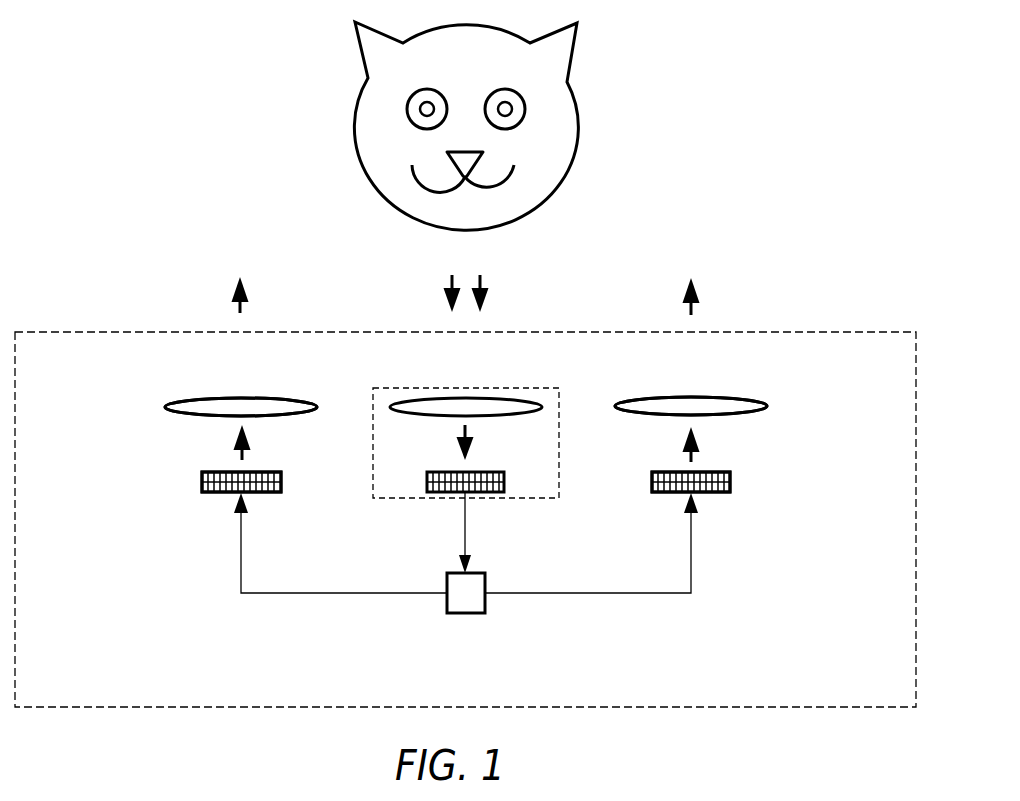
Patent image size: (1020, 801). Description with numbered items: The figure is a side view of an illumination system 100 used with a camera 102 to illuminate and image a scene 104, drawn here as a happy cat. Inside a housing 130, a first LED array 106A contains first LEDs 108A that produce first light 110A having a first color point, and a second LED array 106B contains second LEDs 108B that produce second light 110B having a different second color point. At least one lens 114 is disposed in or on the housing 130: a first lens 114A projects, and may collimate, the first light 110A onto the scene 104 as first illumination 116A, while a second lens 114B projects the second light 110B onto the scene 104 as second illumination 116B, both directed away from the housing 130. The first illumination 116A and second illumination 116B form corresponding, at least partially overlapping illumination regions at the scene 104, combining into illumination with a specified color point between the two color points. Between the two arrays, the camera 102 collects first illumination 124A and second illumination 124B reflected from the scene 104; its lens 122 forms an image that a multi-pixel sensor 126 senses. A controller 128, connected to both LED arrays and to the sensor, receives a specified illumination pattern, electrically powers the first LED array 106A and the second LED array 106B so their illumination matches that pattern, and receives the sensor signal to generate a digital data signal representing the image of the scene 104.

The illumination system 100 is at (166, 186).
The camera 102 is at (560, 443).
The scene 104 is at (353, 127).
The first LED array 106A is at (210, 493).
The second LED array 106B is at (660, 493).
The first LEDs 108A is at (265, 493).
The second LEDs 108B is at (716, 493).
The first light 110A is at (236, 441).
The second light 110B is at (700, 437).
The at least one lens 114 is at (466, 406).
The first lens 114A is at (193, 398).
The second lens 114B is at (647, 398).
The first illumination 116A is at (236, 294).
The second illumination 116B is at (698, 290).
The lens 122 is at (422, 398).
The first illumination reflected from the scene 124A is at (447, 296).
The second illumination reflected from the scene 124B is at (485, 296).
The multi-pixel sensor 126 is at (492, 493).
The controller 128 is at (465, 614).
The housing 130 is at (70, 332).